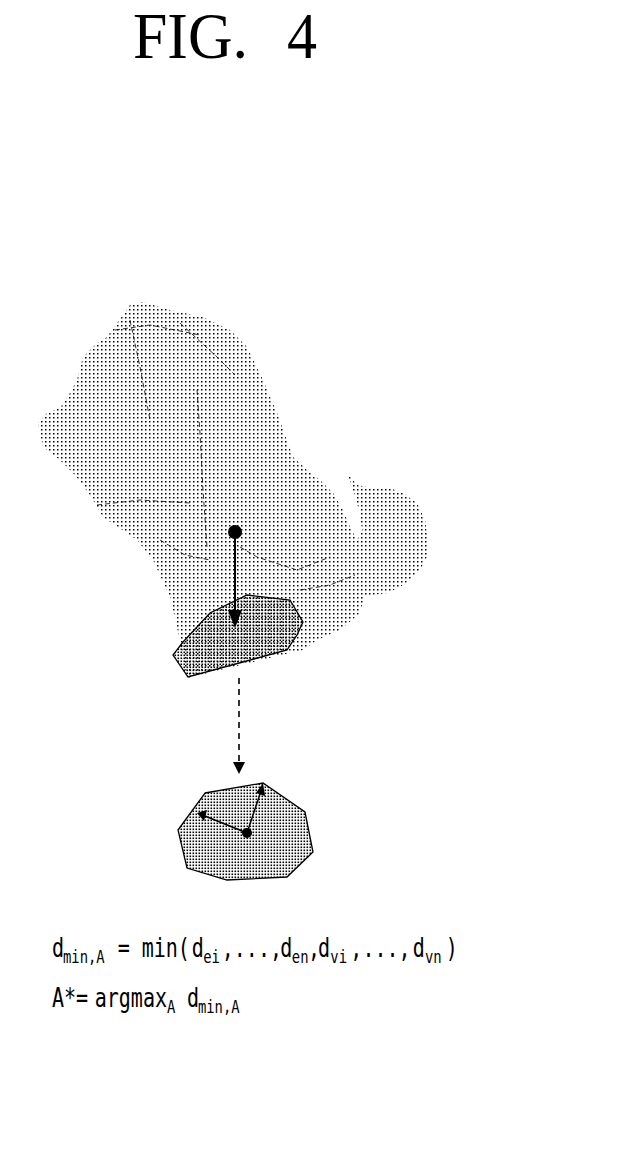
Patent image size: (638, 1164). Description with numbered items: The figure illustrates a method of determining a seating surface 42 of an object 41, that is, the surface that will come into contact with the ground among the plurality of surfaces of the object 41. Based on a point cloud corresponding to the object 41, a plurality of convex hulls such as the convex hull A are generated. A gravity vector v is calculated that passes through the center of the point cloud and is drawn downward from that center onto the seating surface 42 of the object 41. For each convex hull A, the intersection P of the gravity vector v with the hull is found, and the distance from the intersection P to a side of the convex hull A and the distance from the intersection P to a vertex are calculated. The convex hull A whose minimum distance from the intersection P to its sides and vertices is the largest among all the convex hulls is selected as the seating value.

The object 41 is at (107, 337).
The seating surface 42 is at (197, 643).
The gravity vector v is at (235, 574).
The convex hull A is at (245, 831).
The intersection P is at (245, 838).